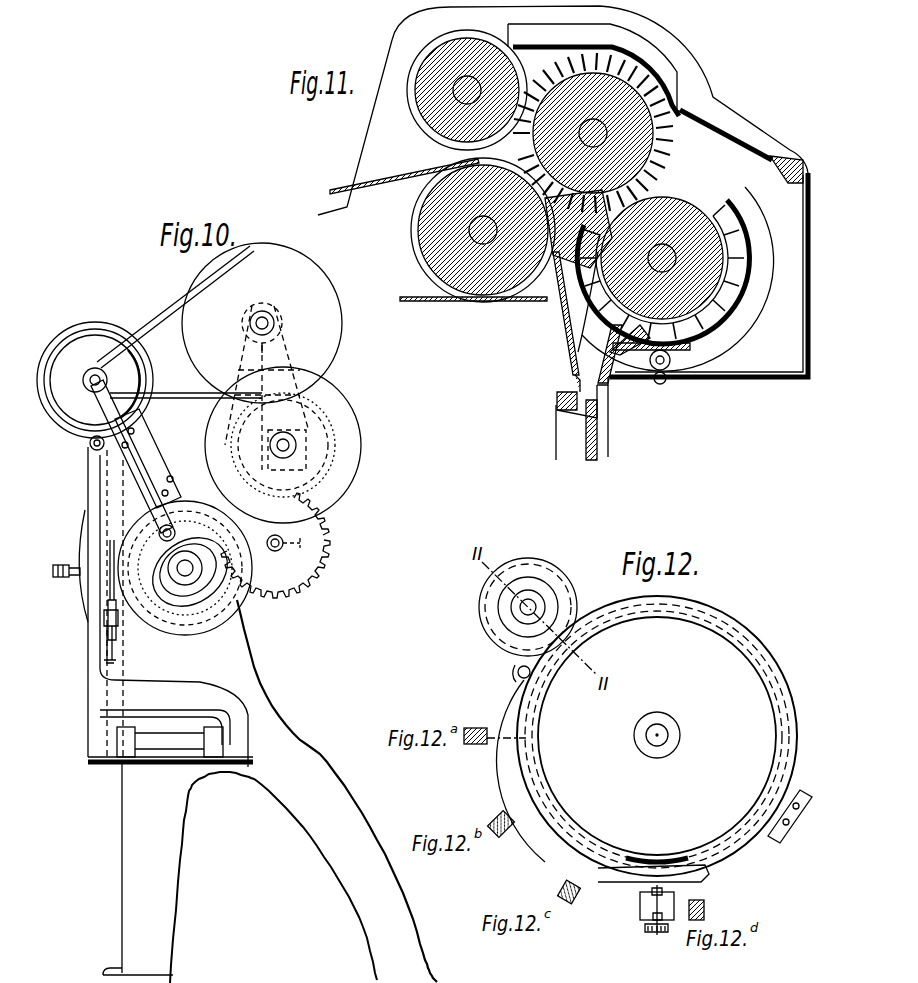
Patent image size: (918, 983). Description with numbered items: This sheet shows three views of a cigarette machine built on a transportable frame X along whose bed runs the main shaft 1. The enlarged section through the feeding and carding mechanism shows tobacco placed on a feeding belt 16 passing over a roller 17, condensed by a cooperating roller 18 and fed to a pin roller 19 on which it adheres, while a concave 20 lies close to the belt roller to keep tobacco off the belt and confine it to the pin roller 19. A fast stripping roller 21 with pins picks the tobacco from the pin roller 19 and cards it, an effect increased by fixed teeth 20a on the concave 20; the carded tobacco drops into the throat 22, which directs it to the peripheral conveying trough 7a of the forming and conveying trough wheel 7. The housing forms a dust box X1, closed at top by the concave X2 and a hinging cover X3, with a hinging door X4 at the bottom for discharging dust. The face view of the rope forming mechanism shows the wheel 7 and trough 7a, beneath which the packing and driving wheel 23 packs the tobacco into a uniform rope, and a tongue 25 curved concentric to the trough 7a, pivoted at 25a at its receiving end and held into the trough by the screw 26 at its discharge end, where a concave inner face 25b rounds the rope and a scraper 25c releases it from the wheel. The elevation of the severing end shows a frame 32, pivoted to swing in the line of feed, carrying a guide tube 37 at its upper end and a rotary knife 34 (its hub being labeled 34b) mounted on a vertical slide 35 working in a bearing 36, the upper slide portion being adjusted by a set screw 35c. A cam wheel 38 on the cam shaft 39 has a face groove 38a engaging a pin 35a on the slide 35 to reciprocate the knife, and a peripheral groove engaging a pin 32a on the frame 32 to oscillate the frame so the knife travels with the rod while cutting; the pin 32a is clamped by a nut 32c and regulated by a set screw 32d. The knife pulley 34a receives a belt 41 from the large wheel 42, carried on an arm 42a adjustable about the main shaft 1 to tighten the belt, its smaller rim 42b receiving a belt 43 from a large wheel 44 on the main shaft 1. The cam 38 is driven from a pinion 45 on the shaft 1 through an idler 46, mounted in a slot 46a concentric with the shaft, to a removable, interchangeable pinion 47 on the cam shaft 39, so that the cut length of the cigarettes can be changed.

In FIG. 10, the main shaft 1 is at (292, 438).
In FIG. 11, the forming and conveying trough wheel 7 is at (598, 441).
In FIG. 12, the forming and conveying trough wheel 7 is at (657, 736).
In FIG. 11, the peripheral conveying trough 7a is at (585, 394).
In FIG. 12, the peripheral conveying trough 7a is at (658, 856).
In FIG. 11, the feeding belt 16 is at (377, 187).
In FIG. 11, the belt roller 17 is at (430, 229).
In FIG. 11, the feed roller 18 is at (432, 98).
In FIG. 11, the pin roller 19 is at (630, 116).
In FIG. 11, the concave 20 is at (583, 262).
In FIG. 11, the fixed teeth 20a is at (560, 325).
In FIG. 11, the stripping roller 21 is at (610, 302).
In FIG. 11, the throat 22 is at (583, 360).
In FIG. 12, the packing and driving wheel 23 is at (556, 580).
In FIG. 12, the tongue 25 is at (472, 745).
In FIG. 12, the pivot 25a is at (518, 672).
In FIG. 12, the concave inner face 25b is at (698, 900).
In FIG. 12, the scraper 25c is at (702, 904).
In FIG. 12, the screw 26 is at (652, 903).
In FIG. 10, the frame 32 is at (104, 685).
In FIG. 10, the pin 32a is at (92, 593).
In FIG. 10, the nut 32c is at (61, 565).
In FIG. 10, the set screw 32d is at (106, 615).
In FIG. 10, the cutter 34 is at (77, 342).
In FIG. 10, the pulley 34a is at (83, 388).
In FIG. 10, the pulley hub 34b is at (108, 378).
In FIG. 10, the vertical slide 35 is at (142, 447).
In FIG. 10, the pin 35a is at (171, 524).
In FIG. 10, the set screw 35c is at (140, 401).
In FIG. 10, the bearing 36 is at (147, 470).
In FIG. 10, the guide tube 37 is at (90, 447).
In FIG. 10, the cam wheel 38 is at (172, 617).
In FIG. 10, the face groove 38a is at (198, 594).
In FIG. 10, the cam shaft 39 is at (186, 578).
In FIG. 10, the belt 41 is at (134, 333).
In FIG. 10, the large wheel 42 is at (262, 323).
In FIG. 10, the arm 42a is at (305, 348).
In FIG. 10, the smaller rim 42b is at (263, 312).
In FIG. 10, the belt 43 is at (322, 388).
In FIG. 10, the large wheel 44 is at (348, 431).
In FIG. 10, the pinion 45 is at (330, 450).
In FIG. 10, the idler 46 is at (312, 537).
In FIG. 10, the slot 46a is at (322, 560).
In FIG. 10, the pinion 47 is at (243, 612).
In FIG. 10, the frame X is at (240, 637).
In FIG. 11, the dust box X1 is at (709, 275).
In FIG. 11, the concave X2 is at (590, 46).
In FIG. 11, the hinging cover X3 is at (563, 110).
In FIG. 11, the hinging door X4 is at (760, 379).